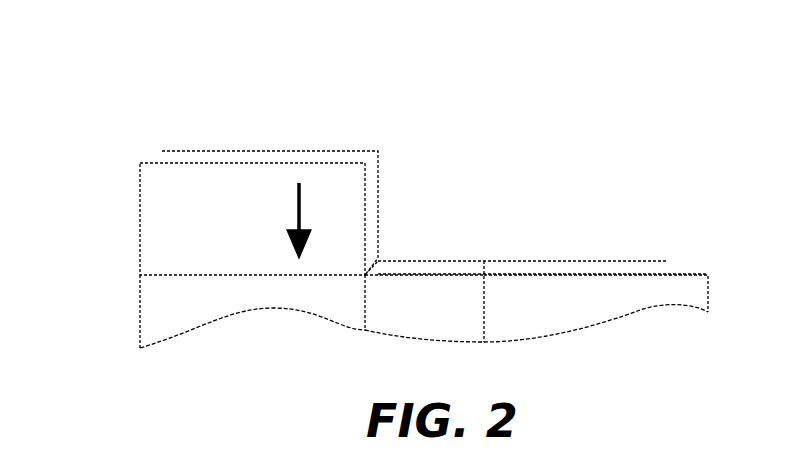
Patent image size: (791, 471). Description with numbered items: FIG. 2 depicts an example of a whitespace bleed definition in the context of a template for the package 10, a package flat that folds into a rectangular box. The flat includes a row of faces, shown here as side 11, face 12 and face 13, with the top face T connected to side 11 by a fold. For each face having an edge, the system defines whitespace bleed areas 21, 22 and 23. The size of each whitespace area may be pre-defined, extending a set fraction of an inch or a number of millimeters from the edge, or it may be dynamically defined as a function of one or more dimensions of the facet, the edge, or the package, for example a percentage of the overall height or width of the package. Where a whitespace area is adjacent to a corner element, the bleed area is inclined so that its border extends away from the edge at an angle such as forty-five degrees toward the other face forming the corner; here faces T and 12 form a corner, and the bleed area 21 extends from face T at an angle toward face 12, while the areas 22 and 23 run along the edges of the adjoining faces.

The package flat 10 is at (123, 66).
The side face 11 is at (252, 255).
The side face 12 is at (424, 301).
The side face 13 is at (596, 308).
The whitespace bleed area 21 is at (320, 136).
The whitespace bleed area 22 is at (445, 232).
The whitespace bleed area 23 is at (603, 233).